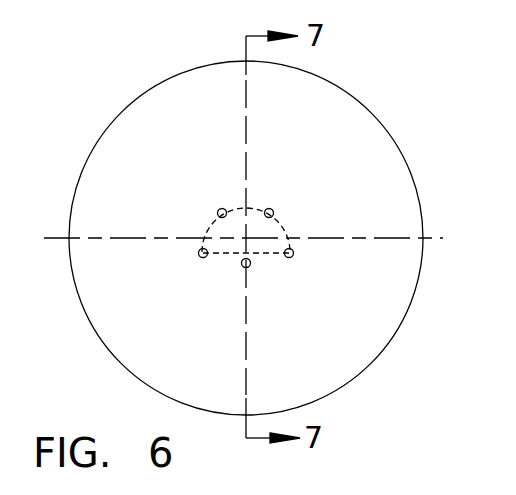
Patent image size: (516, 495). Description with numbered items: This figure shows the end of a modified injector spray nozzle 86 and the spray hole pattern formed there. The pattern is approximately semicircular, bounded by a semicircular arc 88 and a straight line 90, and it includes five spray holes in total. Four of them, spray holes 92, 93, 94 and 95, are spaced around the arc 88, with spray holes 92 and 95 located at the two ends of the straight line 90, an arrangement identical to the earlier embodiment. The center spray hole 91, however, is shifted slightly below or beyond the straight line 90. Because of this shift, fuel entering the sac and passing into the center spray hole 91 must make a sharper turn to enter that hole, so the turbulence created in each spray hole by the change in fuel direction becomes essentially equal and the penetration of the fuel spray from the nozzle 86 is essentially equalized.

The spray nozzle 86 is at (369, 108).
The semicircular arc 88 is at (284, 224).
The straight line 90 is at (224, 255).
The center spray hole 91 is at (250, 266).
The spray hole 92 is at (293, 253).
The spray hole 93 is at (273, 210).
The spray hole 94 is at (219, 210).
The spray hole 95 is at (199, 254).